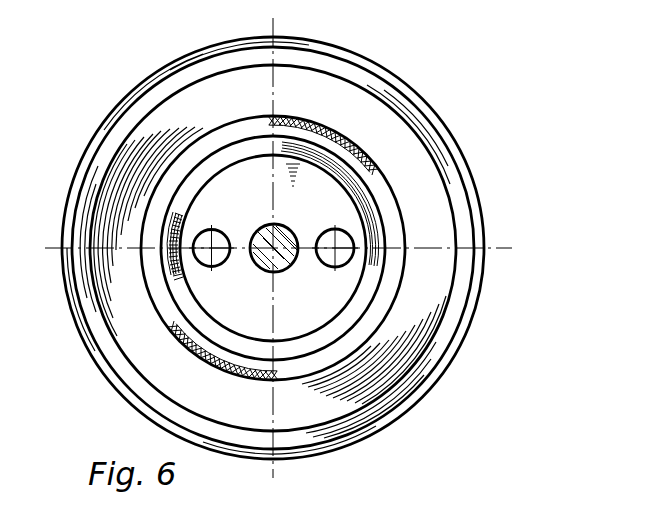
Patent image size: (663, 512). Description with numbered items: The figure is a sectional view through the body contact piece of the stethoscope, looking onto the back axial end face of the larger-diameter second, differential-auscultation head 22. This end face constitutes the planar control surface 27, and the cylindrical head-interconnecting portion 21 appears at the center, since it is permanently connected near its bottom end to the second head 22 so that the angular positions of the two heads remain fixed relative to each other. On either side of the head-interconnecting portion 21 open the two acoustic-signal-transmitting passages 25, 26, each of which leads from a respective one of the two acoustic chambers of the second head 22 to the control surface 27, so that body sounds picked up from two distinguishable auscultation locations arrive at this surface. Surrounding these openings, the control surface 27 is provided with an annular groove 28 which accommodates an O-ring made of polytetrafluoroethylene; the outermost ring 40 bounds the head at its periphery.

The head-interconnecting portion 21 is at (287, 228).
The second differential-auscultation head 22 is at (439, 176).
The acoustic-signal-transmitting passage 25 is at (218, 264).
The acoustic-signal-transmitting passage 26 is at (341, 263).
The planar control surface 27 is at (254, 197).
The annular groove 28 is at (368, 216).
The outer flange 40 is at (483, 216).